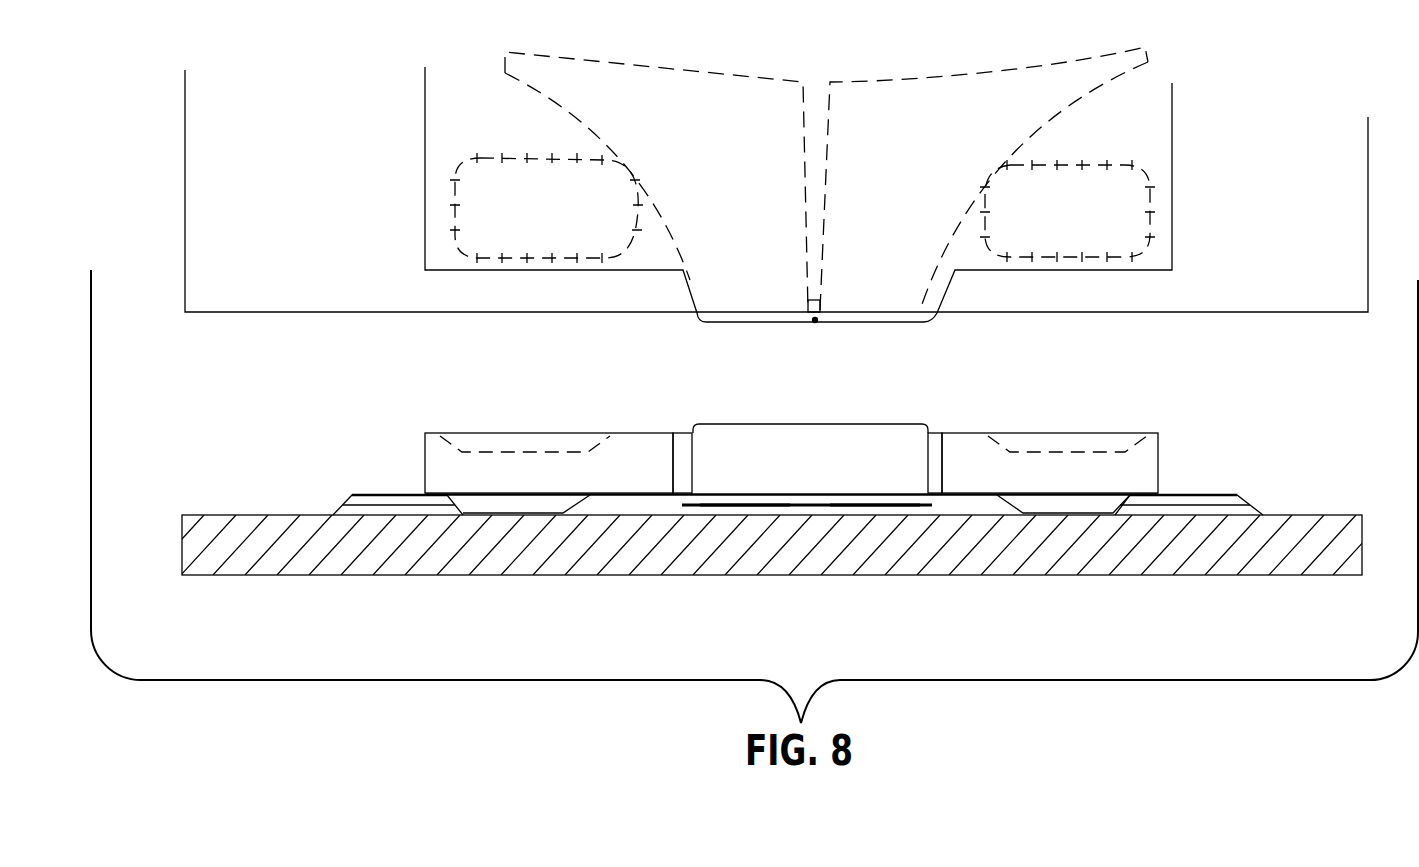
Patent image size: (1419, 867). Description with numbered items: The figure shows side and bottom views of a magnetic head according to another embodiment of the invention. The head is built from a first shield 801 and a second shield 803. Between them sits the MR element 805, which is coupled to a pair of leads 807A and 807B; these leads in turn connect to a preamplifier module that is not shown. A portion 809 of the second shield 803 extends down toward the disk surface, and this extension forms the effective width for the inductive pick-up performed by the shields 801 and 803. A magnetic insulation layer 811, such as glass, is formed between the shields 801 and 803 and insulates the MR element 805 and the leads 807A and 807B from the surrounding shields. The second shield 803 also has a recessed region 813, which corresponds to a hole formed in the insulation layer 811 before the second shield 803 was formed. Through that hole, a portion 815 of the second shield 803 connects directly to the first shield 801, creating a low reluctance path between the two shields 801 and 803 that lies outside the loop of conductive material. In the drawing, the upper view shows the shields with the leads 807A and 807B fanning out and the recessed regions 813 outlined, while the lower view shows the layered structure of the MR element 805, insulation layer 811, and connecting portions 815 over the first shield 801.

The first shield 801 is at (200, 236).
The second shield 803 is at (440, 122).
The MR element 805 is at (815, 320).
The lead 807A is at (623, 107).
The lead 807B is at (1010, 103).
The portion of the second shield 809 is at (810, 323).
The magnetic insulation layer 811 is at (370, 494).
The recessed region 813 is at (477, 228).
The portion of the second shield 815 is at (510, 503).